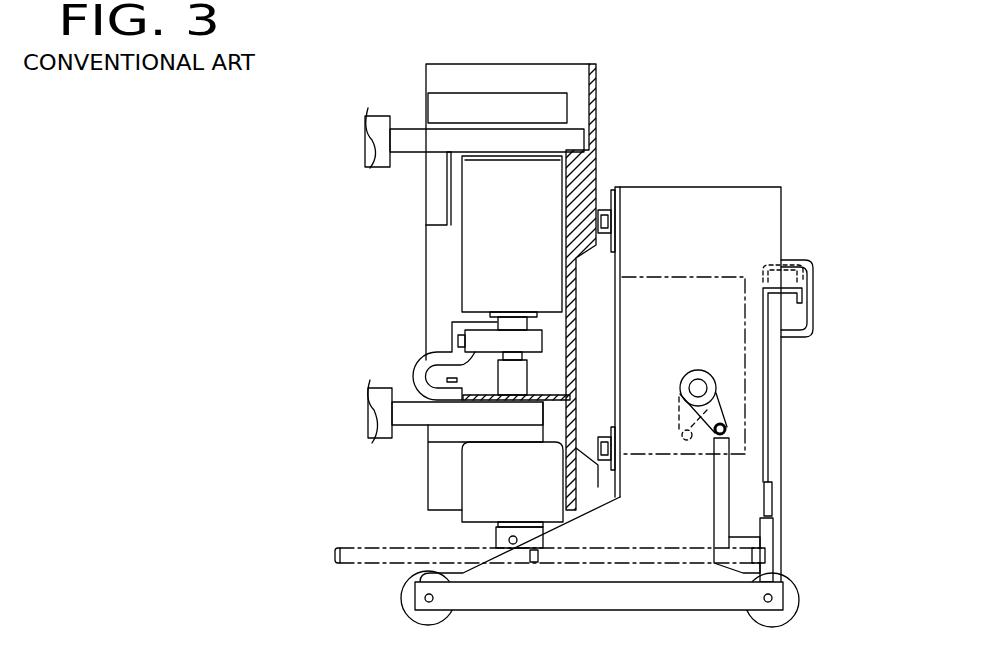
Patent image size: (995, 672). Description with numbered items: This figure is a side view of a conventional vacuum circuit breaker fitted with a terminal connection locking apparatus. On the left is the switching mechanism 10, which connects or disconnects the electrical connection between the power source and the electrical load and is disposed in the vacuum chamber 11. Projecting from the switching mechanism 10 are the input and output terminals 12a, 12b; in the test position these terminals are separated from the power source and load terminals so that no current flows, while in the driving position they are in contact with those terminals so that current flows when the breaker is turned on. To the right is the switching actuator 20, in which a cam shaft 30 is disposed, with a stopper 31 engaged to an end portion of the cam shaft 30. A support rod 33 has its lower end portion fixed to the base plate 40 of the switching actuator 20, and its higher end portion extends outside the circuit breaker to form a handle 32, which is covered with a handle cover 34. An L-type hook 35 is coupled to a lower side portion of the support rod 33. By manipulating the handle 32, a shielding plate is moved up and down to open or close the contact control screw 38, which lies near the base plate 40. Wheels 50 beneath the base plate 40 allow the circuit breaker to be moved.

The switching mechanism 10 is at (397, 97).
The vacuum chamber 11 is at (466, 281).
The input terminal 12a is at (370, 142).
The output terminal 12b is at (367, 403).
The switching actuator 20 is at (722, 182).
The cam shaft 30 is at (703, 386).
The stopper 31 is at (727, 418).
The handle 32 is at (790, 285).
The support rod 33 is at (767, 353).
The handle cover 34 is at (813, 305).
The L-type hook 35 is at (727, 477).
The contact control screw 38 is at (637, 560).
The base plate 40 is at (708, 598).
The wheels 50 is at (793, 598).